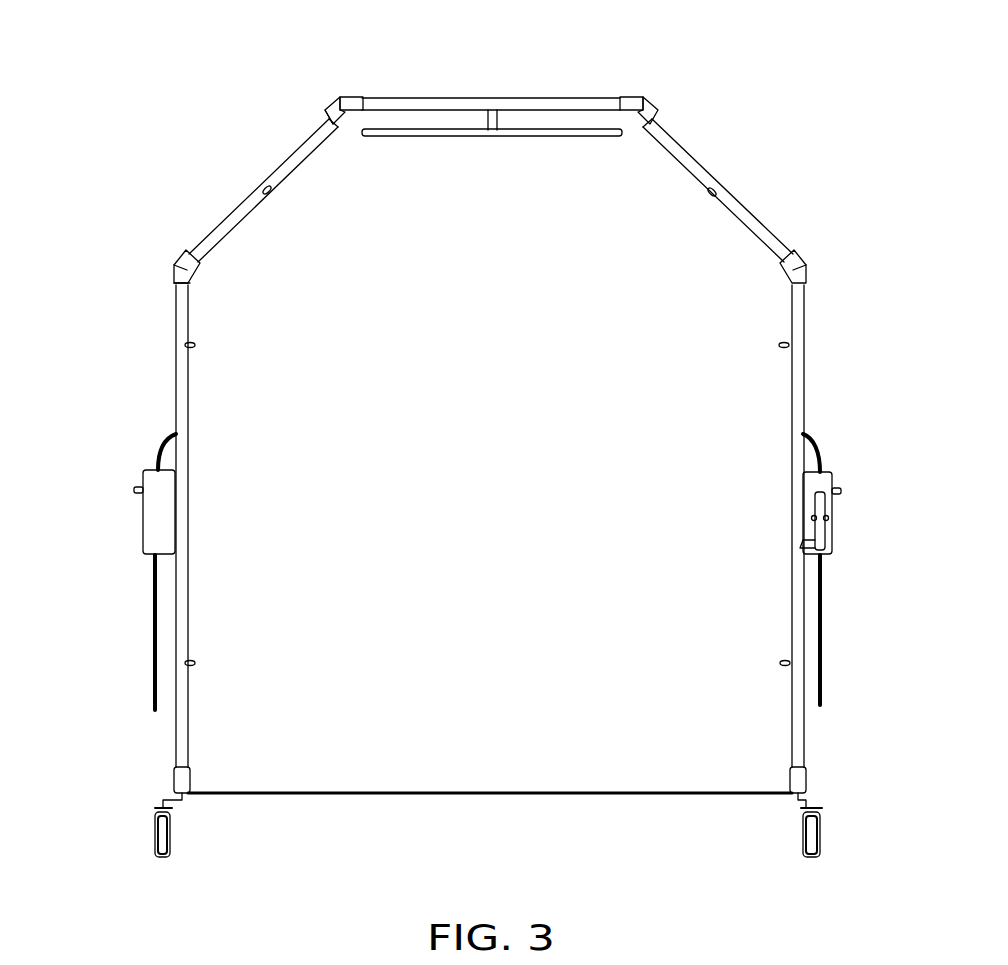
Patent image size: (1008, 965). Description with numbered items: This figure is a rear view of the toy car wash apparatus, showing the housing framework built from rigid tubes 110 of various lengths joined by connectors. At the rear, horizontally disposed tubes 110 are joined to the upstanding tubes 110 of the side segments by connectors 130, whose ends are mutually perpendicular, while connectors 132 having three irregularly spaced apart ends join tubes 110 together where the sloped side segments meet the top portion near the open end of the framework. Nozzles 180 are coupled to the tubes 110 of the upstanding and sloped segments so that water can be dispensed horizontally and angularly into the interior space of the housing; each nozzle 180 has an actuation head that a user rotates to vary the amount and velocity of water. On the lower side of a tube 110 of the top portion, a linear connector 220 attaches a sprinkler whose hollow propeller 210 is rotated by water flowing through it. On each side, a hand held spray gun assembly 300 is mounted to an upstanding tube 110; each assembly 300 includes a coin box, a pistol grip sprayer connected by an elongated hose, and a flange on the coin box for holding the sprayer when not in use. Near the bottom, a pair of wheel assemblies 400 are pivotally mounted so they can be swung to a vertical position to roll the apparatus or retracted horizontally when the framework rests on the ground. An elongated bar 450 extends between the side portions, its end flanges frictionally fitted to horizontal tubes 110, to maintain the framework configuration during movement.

The rigid tube 110 is at (185, 423).
The connector 132 is at (332, 104).
The connector 130 is at (178, 775).
The nozzle 180 is at (272, 193).
The hollow propeller 210 is at (438, 134).
The linear connector 220 is at (492, 118).
The hand held spray gun assembly 300 is at (138, 445).
The wheel assembly 400 is at (135, 828).
The elongated bar 450 is at (402, 795).